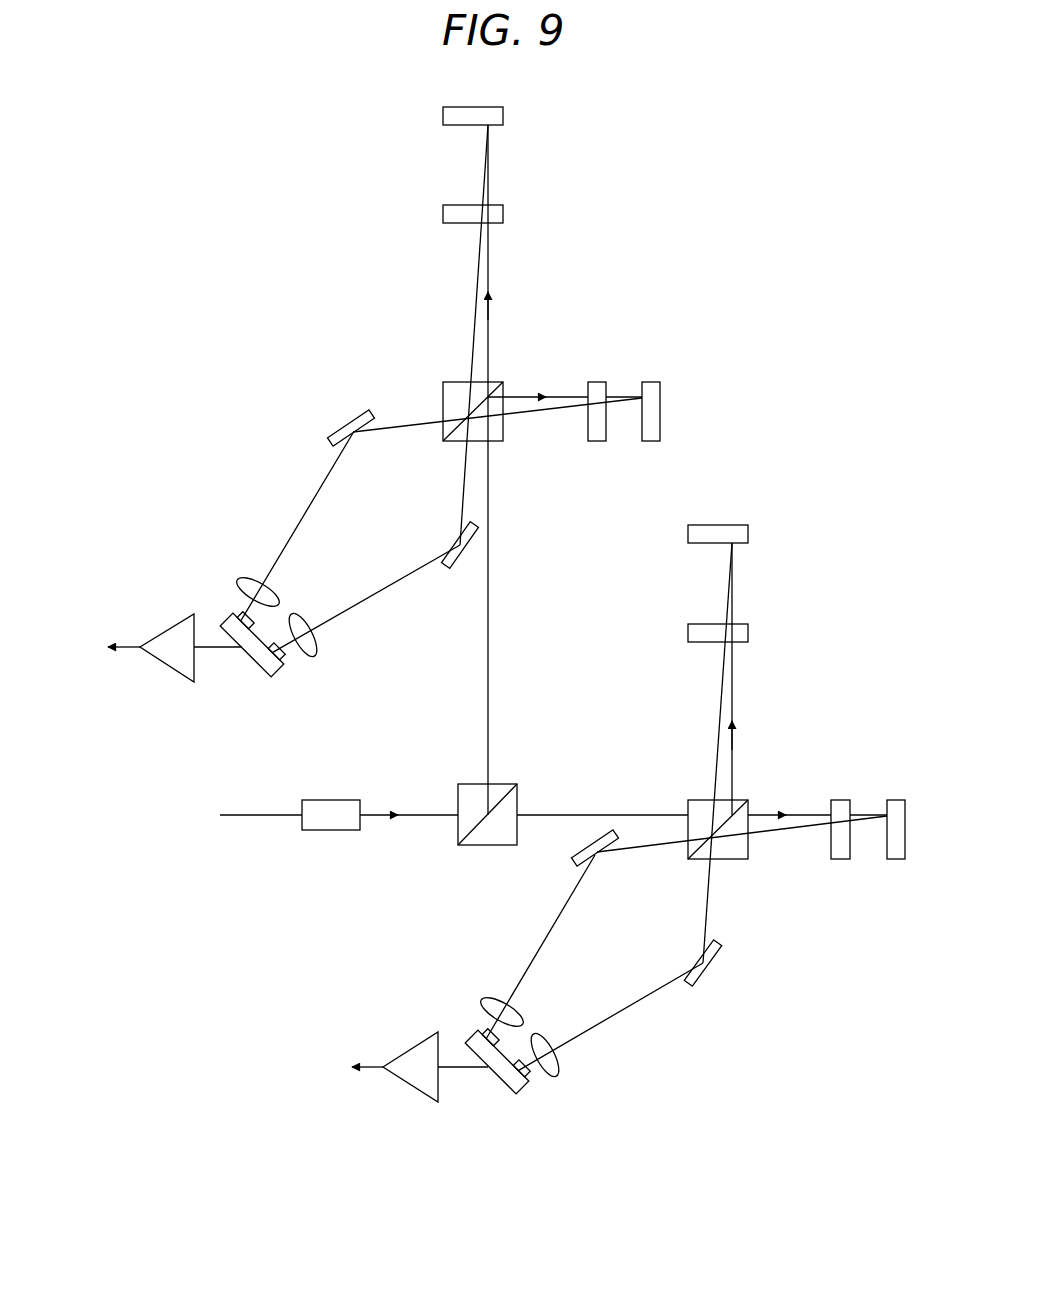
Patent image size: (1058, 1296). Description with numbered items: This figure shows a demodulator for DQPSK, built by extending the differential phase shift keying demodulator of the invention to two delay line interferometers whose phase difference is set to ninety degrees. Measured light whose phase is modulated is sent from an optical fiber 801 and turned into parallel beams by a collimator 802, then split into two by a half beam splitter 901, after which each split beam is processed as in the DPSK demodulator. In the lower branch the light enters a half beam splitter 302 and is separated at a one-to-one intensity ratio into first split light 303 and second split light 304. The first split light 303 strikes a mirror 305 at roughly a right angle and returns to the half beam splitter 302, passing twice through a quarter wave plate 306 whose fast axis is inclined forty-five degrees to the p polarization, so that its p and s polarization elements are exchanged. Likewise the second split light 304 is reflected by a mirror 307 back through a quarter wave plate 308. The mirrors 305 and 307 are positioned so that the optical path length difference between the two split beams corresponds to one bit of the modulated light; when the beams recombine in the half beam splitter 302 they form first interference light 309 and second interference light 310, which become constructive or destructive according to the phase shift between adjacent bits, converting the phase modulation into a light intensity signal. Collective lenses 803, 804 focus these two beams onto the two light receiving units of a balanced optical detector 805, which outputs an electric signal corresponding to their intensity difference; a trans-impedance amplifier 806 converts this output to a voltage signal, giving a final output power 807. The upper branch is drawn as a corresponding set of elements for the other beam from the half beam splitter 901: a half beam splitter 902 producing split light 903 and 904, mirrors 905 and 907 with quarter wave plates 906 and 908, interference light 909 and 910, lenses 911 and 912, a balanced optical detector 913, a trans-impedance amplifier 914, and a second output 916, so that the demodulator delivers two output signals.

The optical fiber 801 is at (262, 815).
The collimator 802 is at (333, 808).
The half beam splitter 901 is at (472, 792).
The polarization beam splitter 902 is at (457, 388).
The transmitted beam 903 is at (490, 262).
The reflected beam 904 is at (521, 388).
The reflecting element 905 is at (503, 113).
The wave plate 906 is at (503, 212).
The reflecting element 907 is at (654, 382).
The wave plate 908 is at (600, 382).
The mirror 909 is at (399, 434).
The mirror 910 is at (460, 514).
The lens 911 is at (243, 582).
The lens 912 is at (312, 650).
The photodetector 913 is at (282, 667).
The amplifier 914 is at (170, 637).
The output signal 916 is at (130, 650).
The half beam splitter 302 is at (700, 805).
The first split light 303 is at (734, 680).
The second split light 304 is at (767, 812).
The mirror 305 is at (748, 532).
The quarter wave plate 306 is at (748, 631).
The mirror 307 is at (896, 859).
The quarter wave plate 308 is at (840, 859).
The first interference light 309 is at (646, 852).
The second interference light 310 is at (704, 931).
The collective lens 803 is at (488, 999).
The collective lens 804 is at (555, 1073).
The balanced optical detector 805 is at (525, 1088).
The amplifier 806 is at (410, 1055).
The final output power 807 is at (373, 1070).